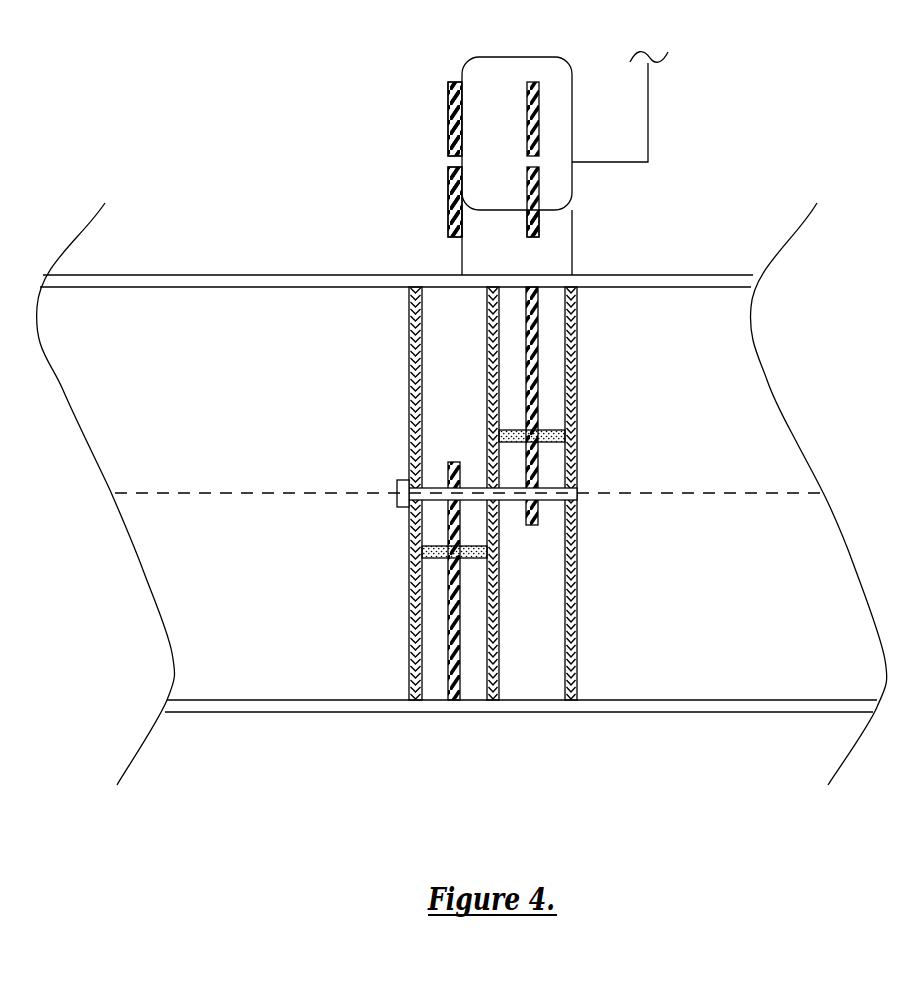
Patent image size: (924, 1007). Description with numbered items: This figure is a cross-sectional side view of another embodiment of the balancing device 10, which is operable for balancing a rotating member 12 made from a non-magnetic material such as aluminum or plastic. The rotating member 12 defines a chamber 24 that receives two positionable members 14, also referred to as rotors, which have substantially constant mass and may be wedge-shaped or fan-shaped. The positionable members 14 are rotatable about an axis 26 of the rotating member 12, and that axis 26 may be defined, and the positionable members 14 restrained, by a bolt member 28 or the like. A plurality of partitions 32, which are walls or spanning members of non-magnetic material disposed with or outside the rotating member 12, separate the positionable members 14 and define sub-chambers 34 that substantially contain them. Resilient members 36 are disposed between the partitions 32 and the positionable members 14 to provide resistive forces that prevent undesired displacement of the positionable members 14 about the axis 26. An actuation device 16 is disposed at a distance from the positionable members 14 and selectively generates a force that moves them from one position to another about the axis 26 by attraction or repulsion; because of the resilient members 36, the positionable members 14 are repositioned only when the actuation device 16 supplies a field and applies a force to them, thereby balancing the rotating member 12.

The balancing device 10 is at (740, 140).
The rotating member 12 is at (737, 712).
The positionable member 14 is at (533, 290).
The actuation device 16 is at (567, 57).
The chamber 24 is at (702, 430).
The axis 26 is at (777, 493).
The bolt member 28 is at (395, 480).
The partition 32 is at (412, 287).
The sub-chamber 34 is at (452, 418).
The resilient member 36 is at (552, 428).